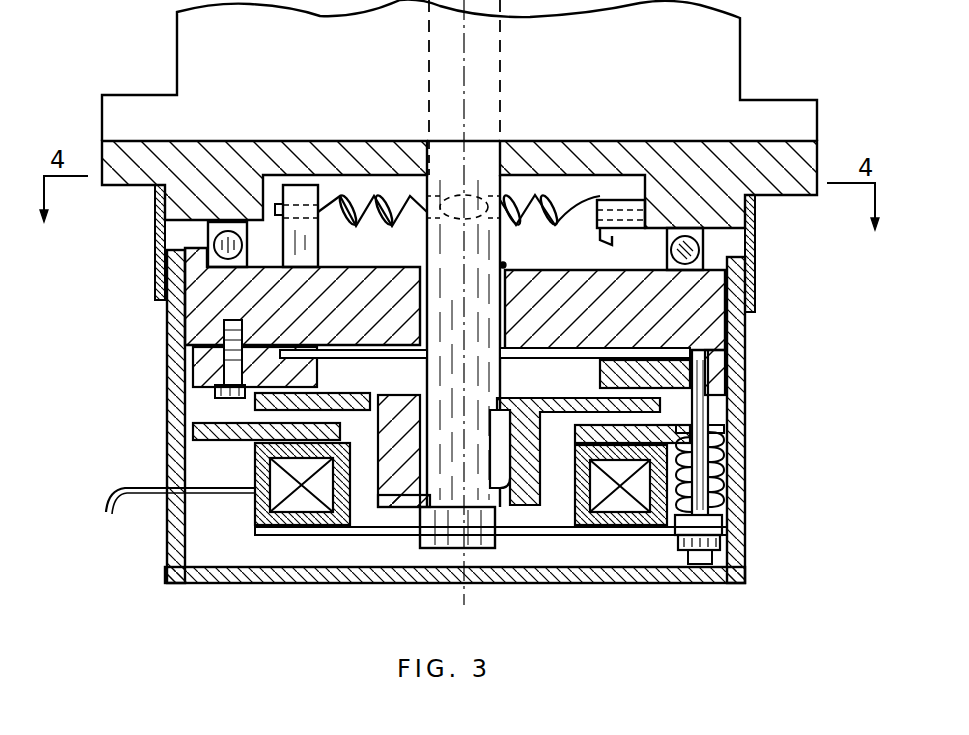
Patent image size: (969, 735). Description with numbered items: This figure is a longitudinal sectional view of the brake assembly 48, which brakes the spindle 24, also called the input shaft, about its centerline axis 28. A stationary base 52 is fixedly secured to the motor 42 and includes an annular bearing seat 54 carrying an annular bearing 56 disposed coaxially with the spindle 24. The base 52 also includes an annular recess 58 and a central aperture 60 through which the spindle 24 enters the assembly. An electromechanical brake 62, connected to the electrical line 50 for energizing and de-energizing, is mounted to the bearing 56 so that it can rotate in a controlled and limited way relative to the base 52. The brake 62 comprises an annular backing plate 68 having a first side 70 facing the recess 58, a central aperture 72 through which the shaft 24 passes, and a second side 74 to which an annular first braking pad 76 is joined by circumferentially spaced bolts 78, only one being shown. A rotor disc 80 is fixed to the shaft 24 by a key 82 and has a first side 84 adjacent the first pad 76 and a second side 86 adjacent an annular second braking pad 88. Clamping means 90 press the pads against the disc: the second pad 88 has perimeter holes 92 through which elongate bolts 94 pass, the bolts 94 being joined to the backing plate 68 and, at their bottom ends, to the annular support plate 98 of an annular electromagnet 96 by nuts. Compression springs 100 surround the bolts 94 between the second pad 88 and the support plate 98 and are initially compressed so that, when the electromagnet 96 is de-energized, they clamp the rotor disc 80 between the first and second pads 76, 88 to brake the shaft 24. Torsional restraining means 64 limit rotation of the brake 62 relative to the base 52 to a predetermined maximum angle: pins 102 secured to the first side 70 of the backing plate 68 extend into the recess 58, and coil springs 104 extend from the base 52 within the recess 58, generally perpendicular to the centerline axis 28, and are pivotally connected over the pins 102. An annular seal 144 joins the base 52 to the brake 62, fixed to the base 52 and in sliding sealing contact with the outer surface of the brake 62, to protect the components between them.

The spindle 24 is at (503, 143).
The centerline axis 28 is at (463, 80).
The motor 42 is at (745, 56).
The brake assembly 48 is at (152, 373).
The electrical line 50 is at (127, 496).
The stationary base 52 is at (800, 196).
The annular bearing seat 54 is at (208, 228).
The annular bearing 56 is at (163, 253).
The annular recess 58 is at (263, 186).
The central aperture 60 is at (420, 150).
The electromechanical brake 62 is at (750, 369).
The torsional restraining means 64 is at (614, 172).
The annular backing plate 68 is at (742, 325).
The first side 70 is at (608, 270).
The central aperture 72 is at (503, 263).
The second side 74 is at (535, 352).
The first braking pad 76 is at (726, 390).
The bolts 78 is at (215, 398).
The rotor disc 80 is at (708, 405).
The key 82 is at (494, 440).
The first side 84 is at (312, 386).
The second side 86 is at (378, 373).
The second braking pad 88 is at (708, 437).
The clamping means 90 is at (287, 540).
The holes 92 is at (716, 462).
The elongate bolts 94 is at (724, 512).
The annular electromagnet 96 is at (352, 508).
The annular support plate 98 is at (572, 537).
The compression springs 100 is at (712, 493).
The pins 102 is at (318, 243).
The coil springs 104 is at (338, 186).
The annular seal 144 is at (756, 268).